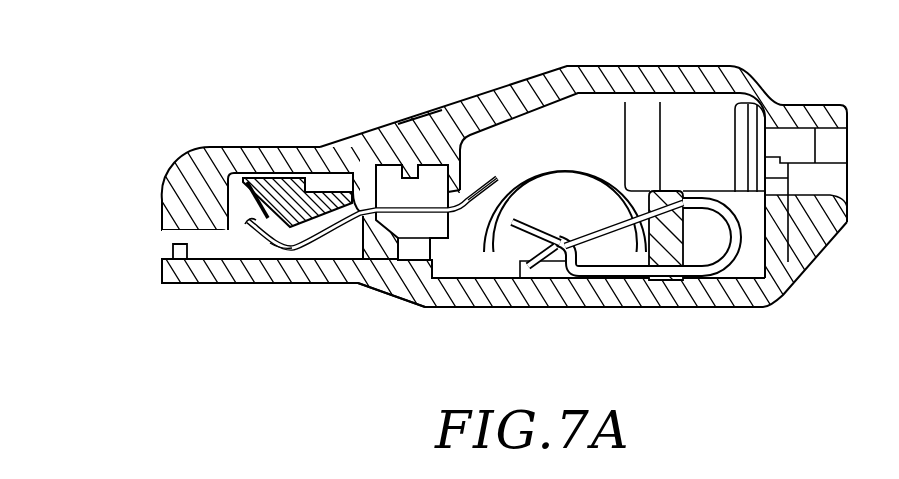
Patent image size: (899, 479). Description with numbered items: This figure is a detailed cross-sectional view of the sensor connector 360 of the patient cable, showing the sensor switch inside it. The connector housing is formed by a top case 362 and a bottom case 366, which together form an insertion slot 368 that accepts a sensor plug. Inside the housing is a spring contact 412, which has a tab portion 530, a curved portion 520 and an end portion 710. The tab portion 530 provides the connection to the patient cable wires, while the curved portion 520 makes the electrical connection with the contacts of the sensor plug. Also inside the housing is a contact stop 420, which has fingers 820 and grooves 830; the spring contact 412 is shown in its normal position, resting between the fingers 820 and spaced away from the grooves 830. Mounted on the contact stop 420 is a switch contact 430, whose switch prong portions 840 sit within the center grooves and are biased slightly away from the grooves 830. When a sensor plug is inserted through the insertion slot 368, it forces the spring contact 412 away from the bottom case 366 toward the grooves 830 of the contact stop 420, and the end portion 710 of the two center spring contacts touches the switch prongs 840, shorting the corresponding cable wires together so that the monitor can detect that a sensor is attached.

The sensor connector 360 is at (449, 188).
The top case 362 is at (465, 112).
The bottom case 366 is at (605, 310).
The insertion slot 368 is at (158, 243).
The spring contact 412 is at (383, 293).
The contact stop 420 is at (322, 180).
The switch contact 430 is at (243, 185).
The curved portion 520 is at (313, 240).
The tab portion 530 is at (483, 187).
The end portion 710 is at (285, 252).
The fingers 820 is at (247, 228).
The grooves 830 is at (284, 178).
The switch prong portions 840 is at (212, 200).